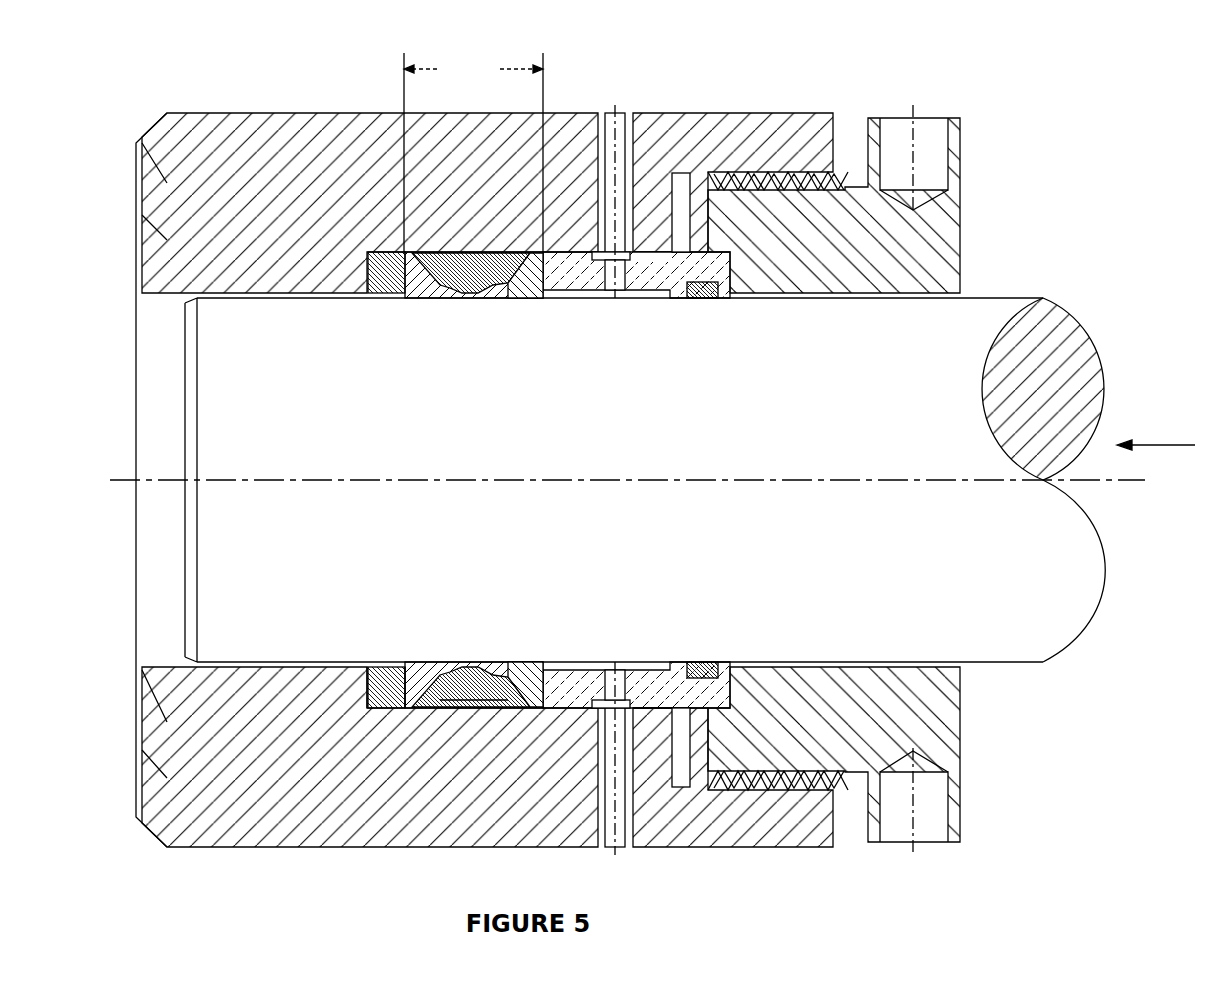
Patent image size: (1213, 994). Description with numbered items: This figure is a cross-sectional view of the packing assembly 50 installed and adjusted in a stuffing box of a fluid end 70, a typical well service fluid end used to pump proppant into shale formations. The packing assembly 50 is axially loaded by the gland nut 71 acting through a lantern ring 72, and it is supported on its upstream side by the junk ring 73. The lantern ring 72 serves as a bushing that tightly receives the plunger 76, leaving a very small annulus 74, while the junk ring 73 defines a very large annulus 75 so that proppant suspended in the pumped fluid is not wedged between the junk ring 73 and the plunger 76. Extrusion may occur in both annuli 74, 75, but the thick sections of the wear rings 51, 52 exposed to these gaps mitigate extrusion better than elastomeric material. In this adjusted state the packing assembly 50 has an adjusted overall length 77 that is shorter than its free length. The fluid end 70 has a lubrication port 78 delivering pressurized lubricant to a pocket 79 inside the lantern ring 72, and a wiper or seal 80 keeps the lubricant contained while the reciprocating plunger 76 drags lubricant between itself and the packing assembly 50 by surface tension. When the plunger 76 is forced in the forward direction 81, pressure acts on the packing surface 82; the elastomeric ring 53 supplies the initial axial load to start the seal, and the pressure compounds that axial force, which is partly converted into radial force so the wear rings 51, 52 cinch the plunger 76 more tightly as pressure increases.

The fluid end 70 is at (233, 130).
The gland nut 71 is at (952, 228).
The lantern ring 72 is at (676, 258).
The junk ring 73 is at (380, 265).
The annulus 74 is at (548, 668).
The annulus 75 is at (372, 667).
The plunger 76 is at (990, 303).
The adjusted overall length 77 is at (470, 60).
The lubrication port 78 is at (617, 120).
The pocket 79 is at (651, 258).
The wiper or seal 80 is at (707, 288).
The forward direction 81 is at (1160, 437).
The packing surface 82 is at (398, 690).
The packing assembly 50 is at (483, 222).
The wear ring 51 is at (425, 680).
The wear ring 52 is at (537, 680).
The elastomeric ring 53 is at (497, 693).